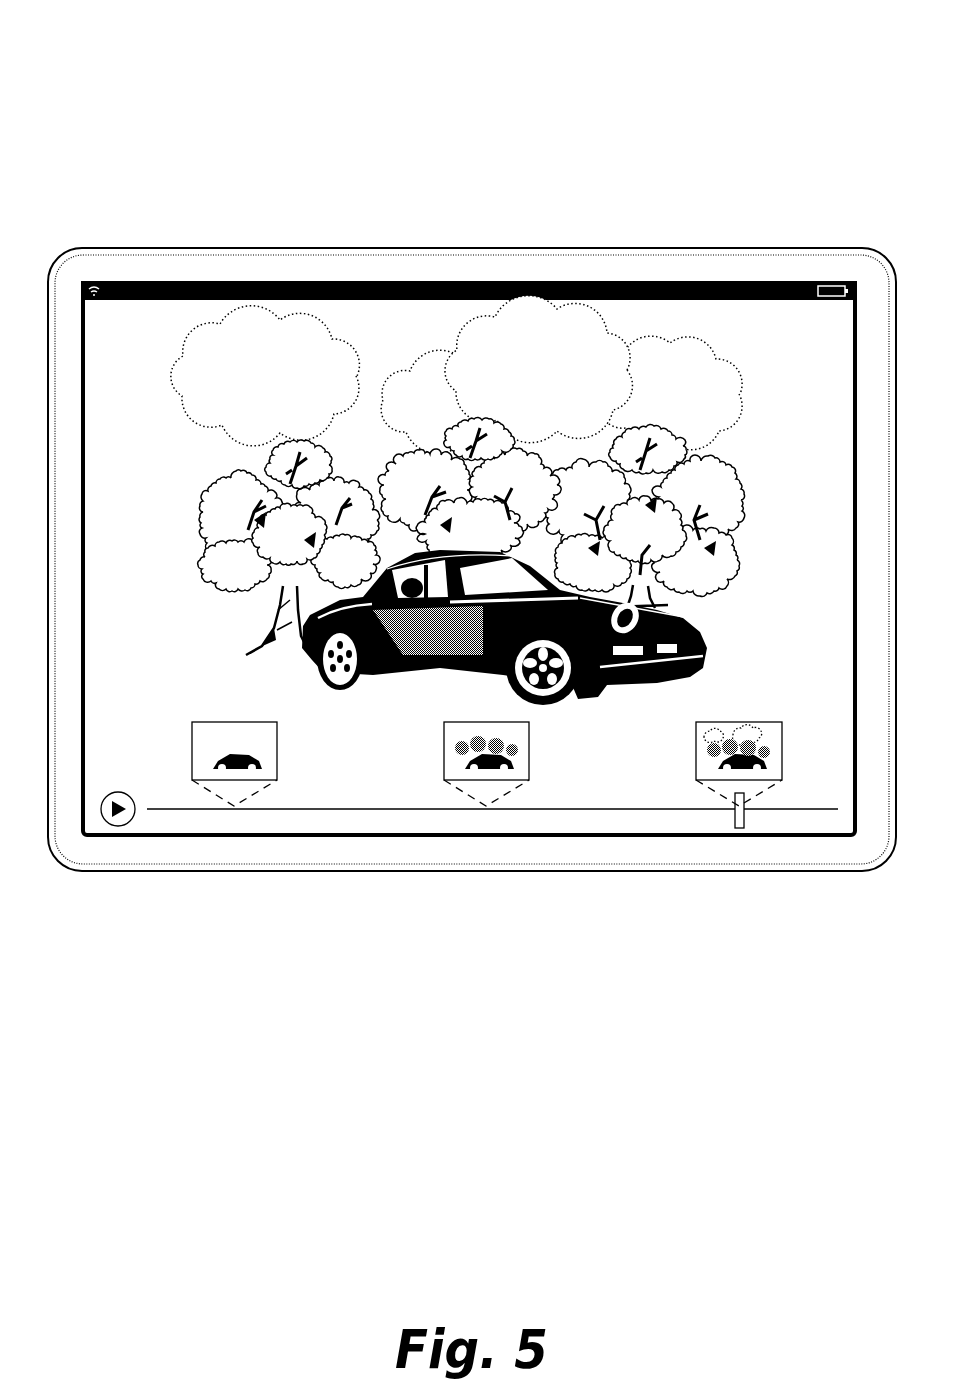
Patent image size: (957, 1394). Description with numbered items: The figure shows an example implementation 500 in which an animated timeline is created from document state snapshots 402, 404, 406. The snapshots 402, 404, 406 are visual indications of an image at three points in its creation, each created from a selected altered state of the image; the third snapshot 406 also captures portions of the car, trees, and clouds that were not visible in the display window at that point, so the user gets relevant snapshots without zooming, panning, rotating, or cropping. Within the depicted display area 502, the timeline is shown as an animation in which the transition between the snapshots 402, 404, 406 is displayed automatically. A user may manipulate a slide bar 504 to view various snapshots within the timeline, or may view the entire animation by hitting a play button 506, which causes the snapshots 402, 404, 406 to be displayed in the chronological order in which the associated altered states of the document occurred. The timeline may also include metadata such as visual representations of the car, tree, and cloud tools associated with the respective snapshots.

The example implementation 500 is at (105, 36).
The video display area 502 is at (828, 341).
The document state snapshot 402 is at (234, 722).
The document state snapshot 404 is at (485, 722).
The document state snapshot 406 is at (738, 722).
The slide bar 504 is at (736, 828).
The play button 506 is at (134, 822).